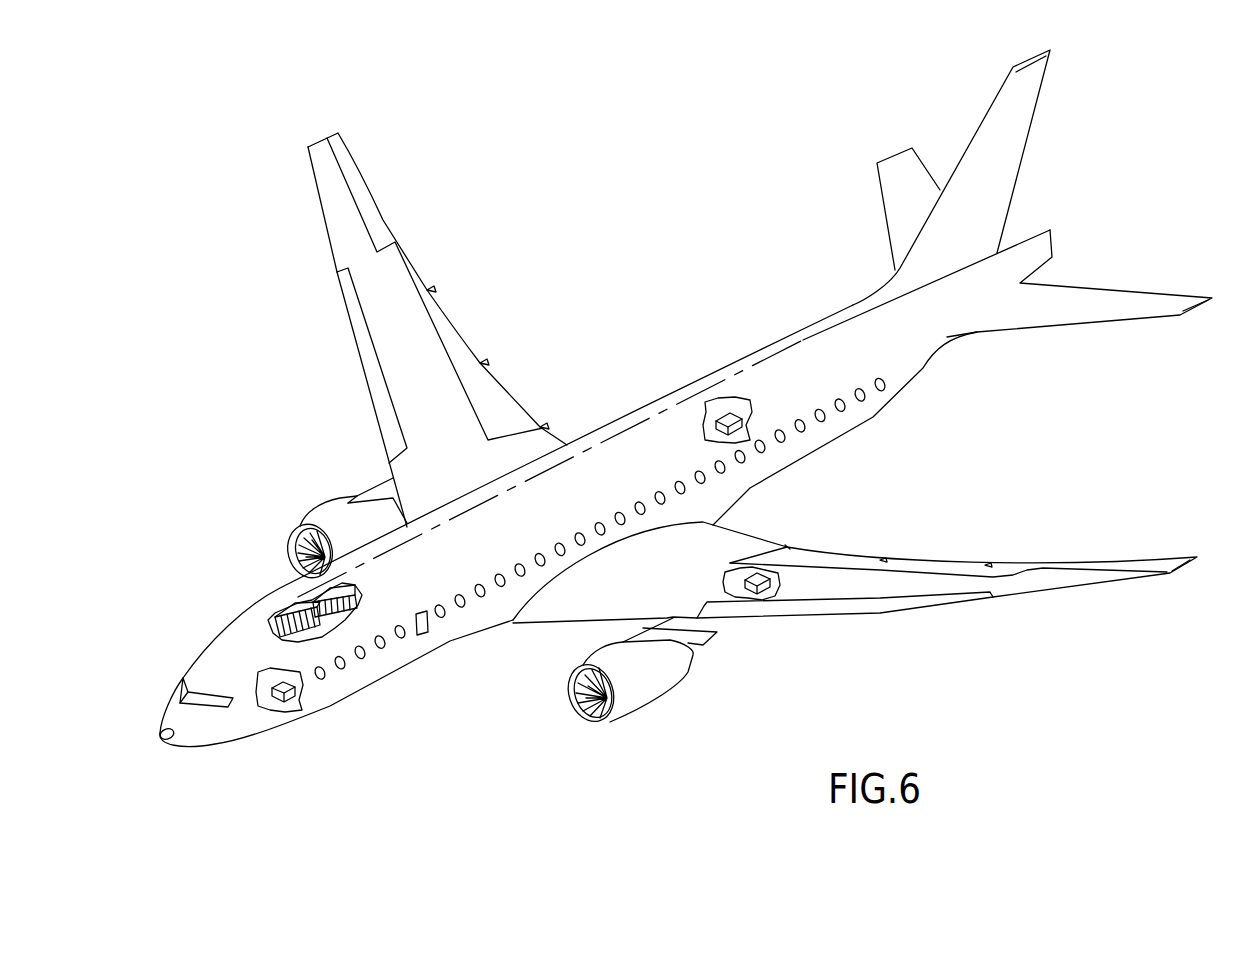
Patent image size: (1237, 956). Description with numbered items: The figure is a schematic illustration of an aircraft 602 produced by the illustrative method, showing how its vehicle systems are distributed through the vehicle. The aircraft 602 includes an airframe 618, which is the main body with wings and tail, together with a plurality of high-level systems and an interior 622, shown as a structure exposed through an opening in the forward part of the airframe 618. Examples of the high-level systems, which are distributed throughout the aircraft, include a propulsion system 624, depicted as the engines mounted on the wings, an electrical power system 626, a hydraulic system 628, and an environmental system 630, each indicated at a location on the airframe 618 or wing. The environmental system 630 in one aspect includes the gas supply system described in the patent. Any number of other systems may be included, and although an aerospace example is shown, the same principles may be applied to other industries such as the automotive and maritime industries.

The aircraft 602 is at (277, 321).
The airframe 618 is at (276, 580).
The interior 622 is at (322, 637).
The propulsion system 624 is at (330, 508).
The electrical power system 626 is at (277, 682).
The hydraulic system 628 is at (756, 578).
The environmental system 630 is at (722, 418).